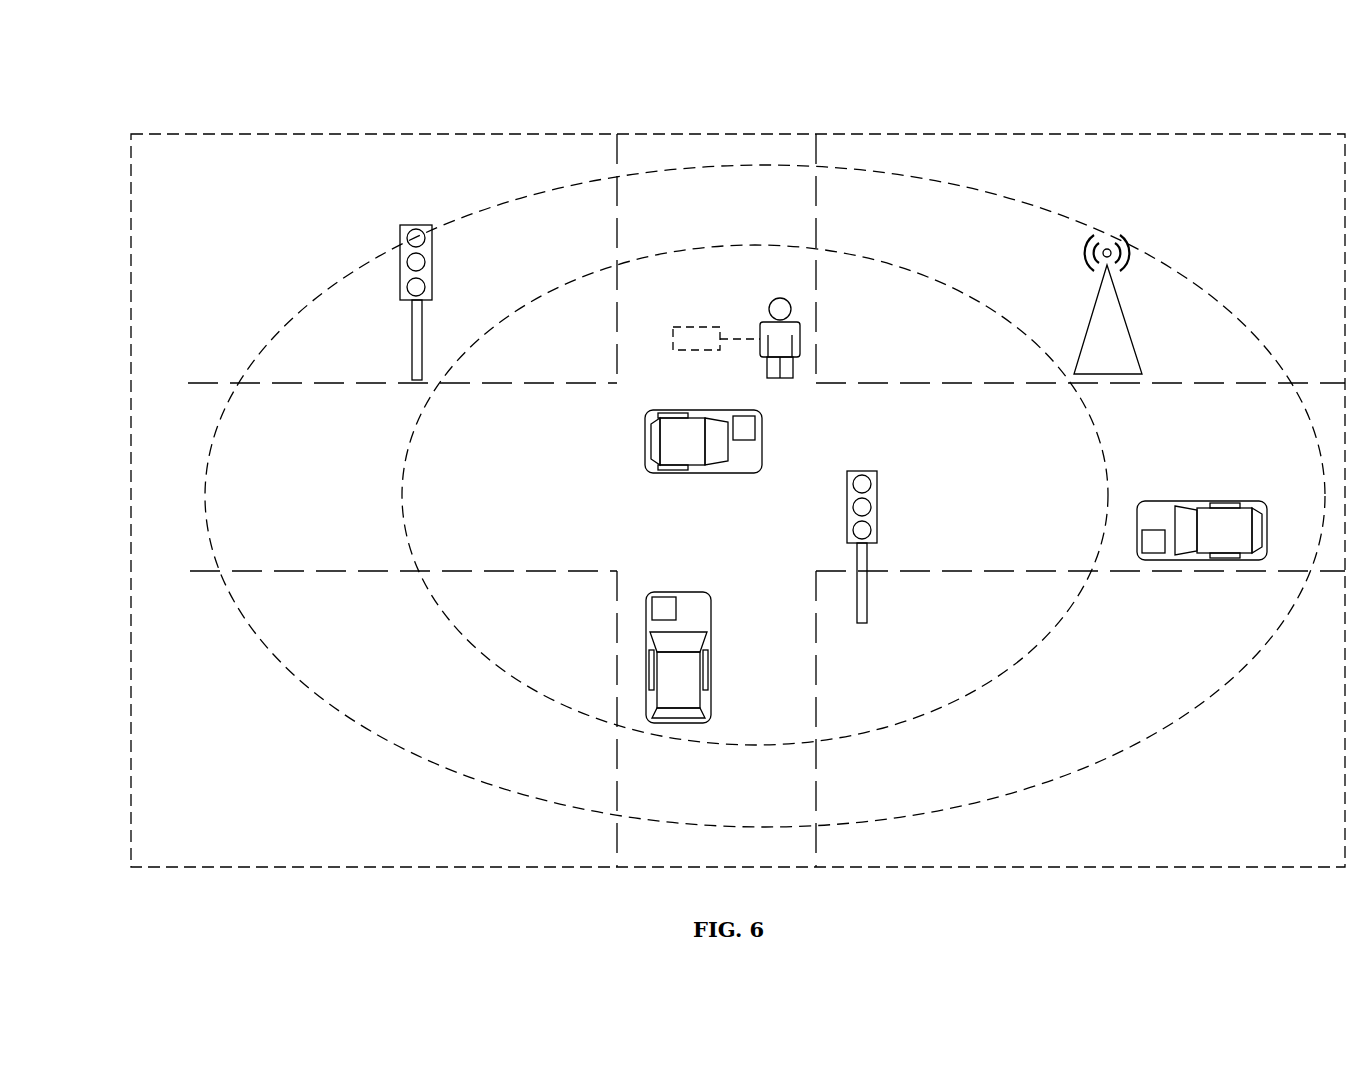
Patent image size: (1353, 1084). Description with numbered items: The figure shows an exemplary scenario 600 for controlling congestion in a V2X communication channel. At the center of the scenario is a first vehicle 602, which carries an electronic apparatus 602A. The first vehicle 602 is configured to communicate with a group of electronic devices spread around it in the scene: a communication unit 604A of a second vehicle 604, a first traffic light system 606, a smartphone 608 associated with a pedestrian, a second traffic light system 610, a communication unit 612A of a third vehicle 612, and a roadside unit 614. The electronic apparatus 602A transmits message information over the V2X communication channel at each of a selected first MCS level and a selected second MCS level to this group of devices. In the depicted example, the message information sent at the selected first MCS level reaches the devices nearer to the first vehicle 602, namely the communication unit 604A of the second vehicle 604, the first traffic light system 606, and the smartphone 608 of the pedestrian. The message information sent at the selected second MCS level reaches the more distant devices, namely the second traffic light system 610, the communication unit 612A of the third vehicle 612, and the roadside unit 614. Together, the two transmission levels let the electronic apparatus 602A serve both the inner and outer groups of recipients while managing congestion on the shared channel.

The exemplary scenario 600 is at (104, 101).
The first vehicle 602 is at (746, 464).
The electronic apparatus 602A is at (745, 430).
The second vehicle 604 is at (692, 632).
The communication unit of second vehicle 604A is at (663, 610).
The first traffic light system 606 is at (878, 512).
The smartphone 608 is at (697, 337).
The second traffic light system 610 is at (408, 272).
The third vehicle 612 is at (1202, 534).
The communication unit of third vehicle 612A is at (1155, 547).
The roadside unit 614 is at (1127, 348).